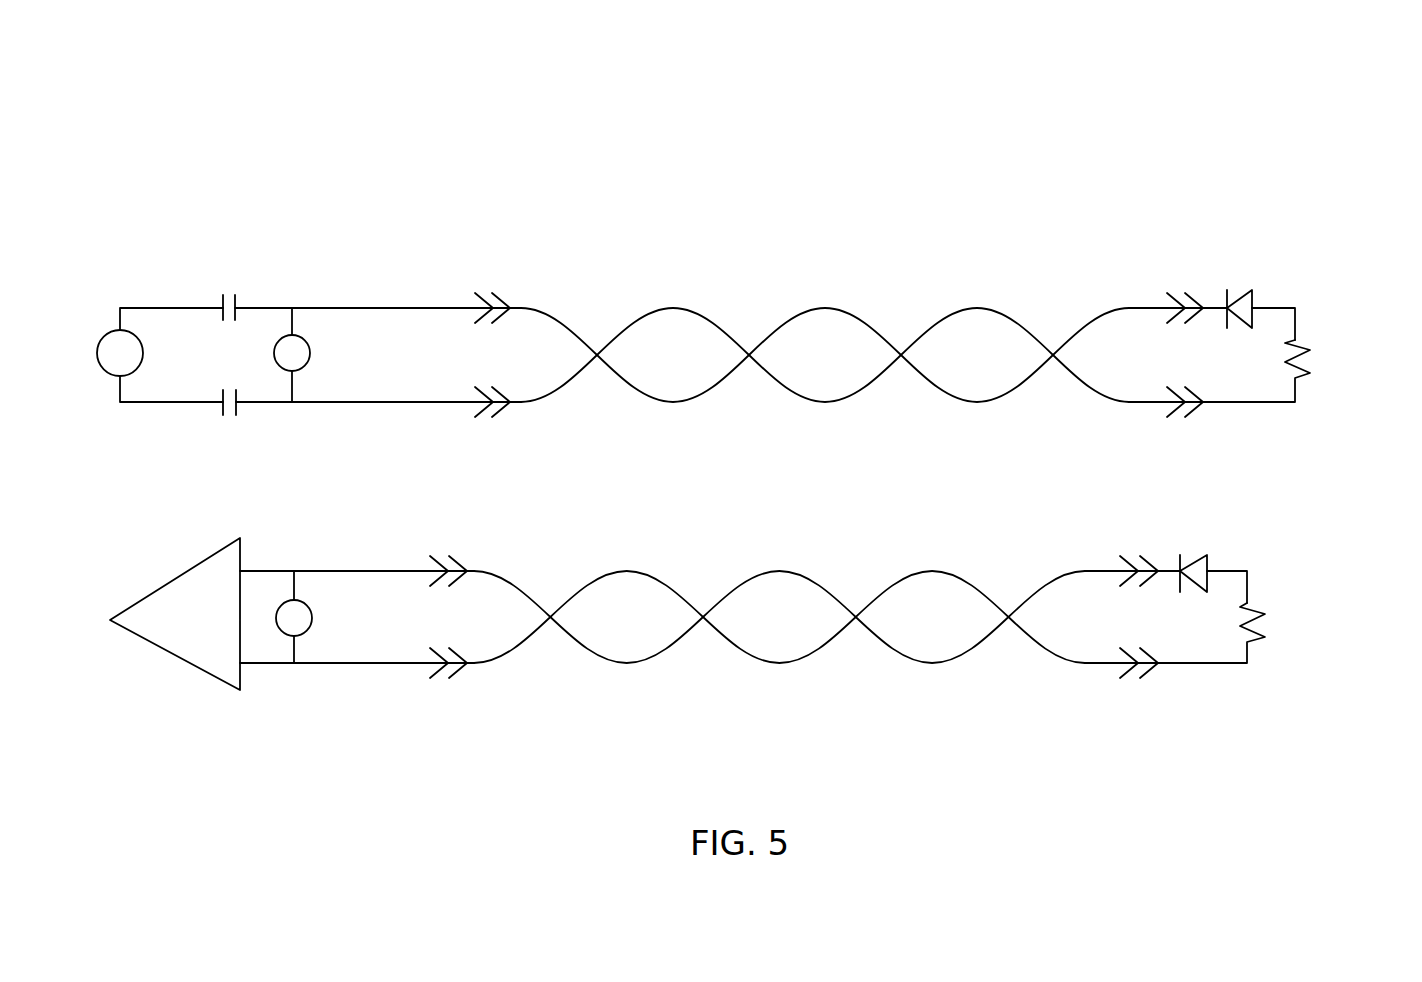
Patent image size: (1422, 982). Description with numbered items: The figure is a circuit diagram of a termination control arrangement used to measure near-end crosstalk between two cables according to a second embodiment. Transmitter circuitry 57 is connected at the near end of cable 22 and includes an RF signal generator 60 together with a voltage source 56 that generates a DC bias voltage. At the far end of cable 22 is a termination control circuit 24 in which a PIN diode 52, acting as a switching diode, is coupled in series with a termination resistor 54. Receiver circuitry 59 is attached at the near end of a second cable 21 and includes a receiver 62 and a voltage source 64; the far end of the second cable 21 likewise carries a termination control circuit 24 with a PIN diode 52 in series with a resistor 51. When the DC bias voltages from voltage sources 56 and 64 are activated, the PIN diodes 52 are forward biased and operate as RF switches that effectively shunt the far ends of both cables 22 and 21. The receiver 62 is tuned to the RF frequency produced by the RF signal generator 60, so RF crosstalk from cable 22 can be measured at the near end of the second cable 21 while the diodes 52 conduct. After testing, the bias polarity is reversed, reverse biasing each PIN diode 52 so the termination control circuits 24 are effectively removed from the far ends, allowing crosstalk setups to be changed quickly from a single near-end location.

The transmitter circuitry 57 is at (206, 196).
The RF signal generator 60 is at (97, 343).
The voltage source 56 is at (313, 346).
The termination control circuit 24 is at (990, 228).
The cable 22 is at (821, 308).
The second cable 21 is at (777, 571).
The PIN diode 52 is at (1252, 290).
The termination resistor 54 is at (1310, 362).
The load resistor 51 is at (1265, 634).
The receiver circuitry 59 is at (219, 730).
The receiver 62 is at (157, 590).
The voltage source 64 is at (315, 622).